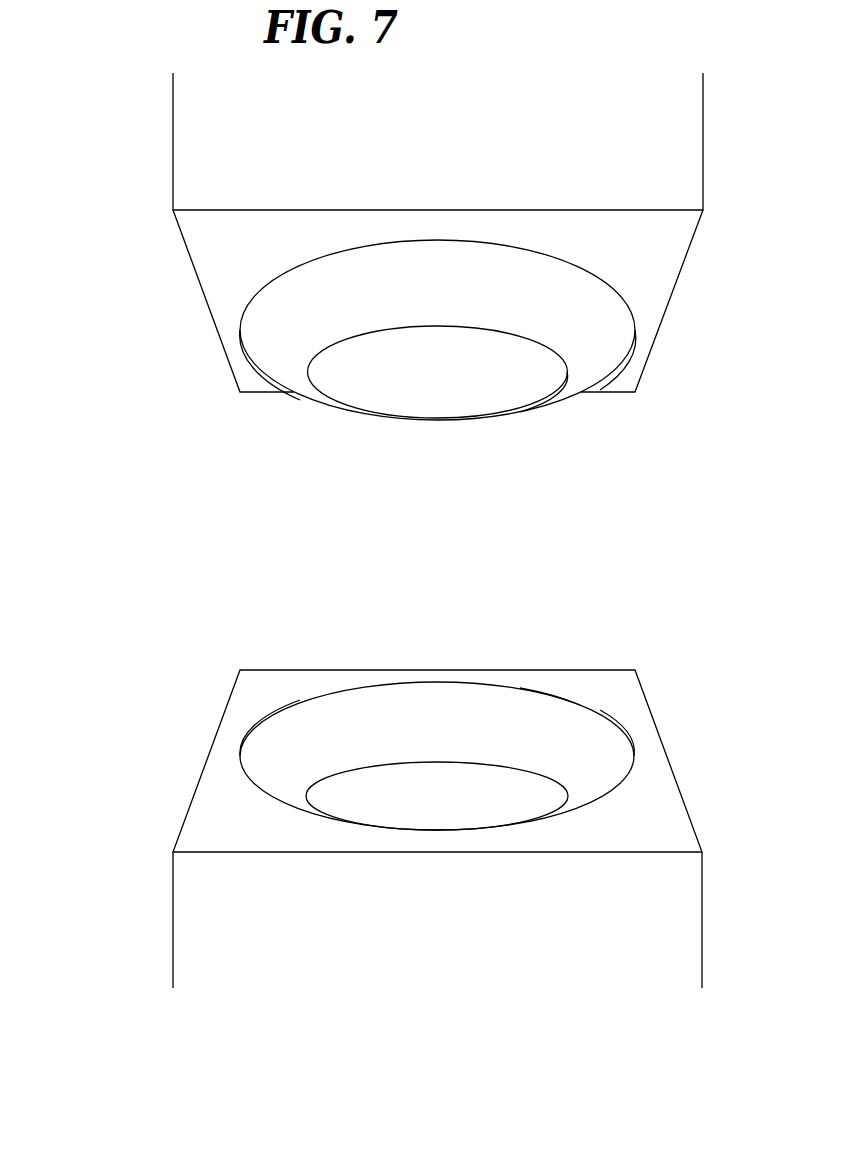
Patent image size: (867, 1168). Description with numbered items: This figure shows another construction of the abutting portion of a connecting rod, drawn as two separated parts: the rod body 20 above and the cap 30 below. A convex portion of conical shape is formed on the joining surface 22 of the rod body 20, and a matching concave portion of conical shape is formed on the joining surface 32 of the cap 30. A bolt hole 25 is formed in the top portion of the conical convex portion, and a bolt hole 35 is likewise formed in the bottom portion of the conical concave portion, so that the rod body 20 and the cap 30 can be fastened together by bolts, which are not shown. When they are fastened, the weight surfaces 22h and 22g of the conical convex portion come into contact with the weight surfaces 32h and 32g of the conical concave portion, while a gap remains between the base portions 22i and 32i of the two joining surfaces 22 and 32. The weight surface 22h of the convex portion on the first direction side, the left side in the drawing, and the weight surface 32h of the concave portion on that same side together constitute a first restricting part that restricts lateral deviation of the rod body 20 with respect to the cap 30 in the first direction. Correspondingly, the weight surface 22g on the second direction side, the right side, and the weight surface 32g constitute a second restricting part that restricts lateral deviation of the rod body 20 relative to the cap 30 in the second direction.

The rod body 20 is at (172, 178).
The joining surface of the rod body 22 is at (288, 397).
The weight surface of the conical convex portion on the second direction side 22g is at (583, 352).
The weight surface of the conical convex portion on the first direction side 22h is at (273, 348).
The base portion of the joining surface of the rod body 22i is at (645, 282).
The bolt hole 25 is at (343, 347).
The cap 30 is at (172, 862).
The joining surface of the cap 32 is at (411, 664).
The weight surface of the conical concave portion on the second direction side 32g is at (502, 737).
The weight surface of the conical concave portion on the first direction side 32h is at (286, 742).
The base portion of the joining surface of the cap 32i is at (642, 718).
The bolt hole 35 is at (358, 770).